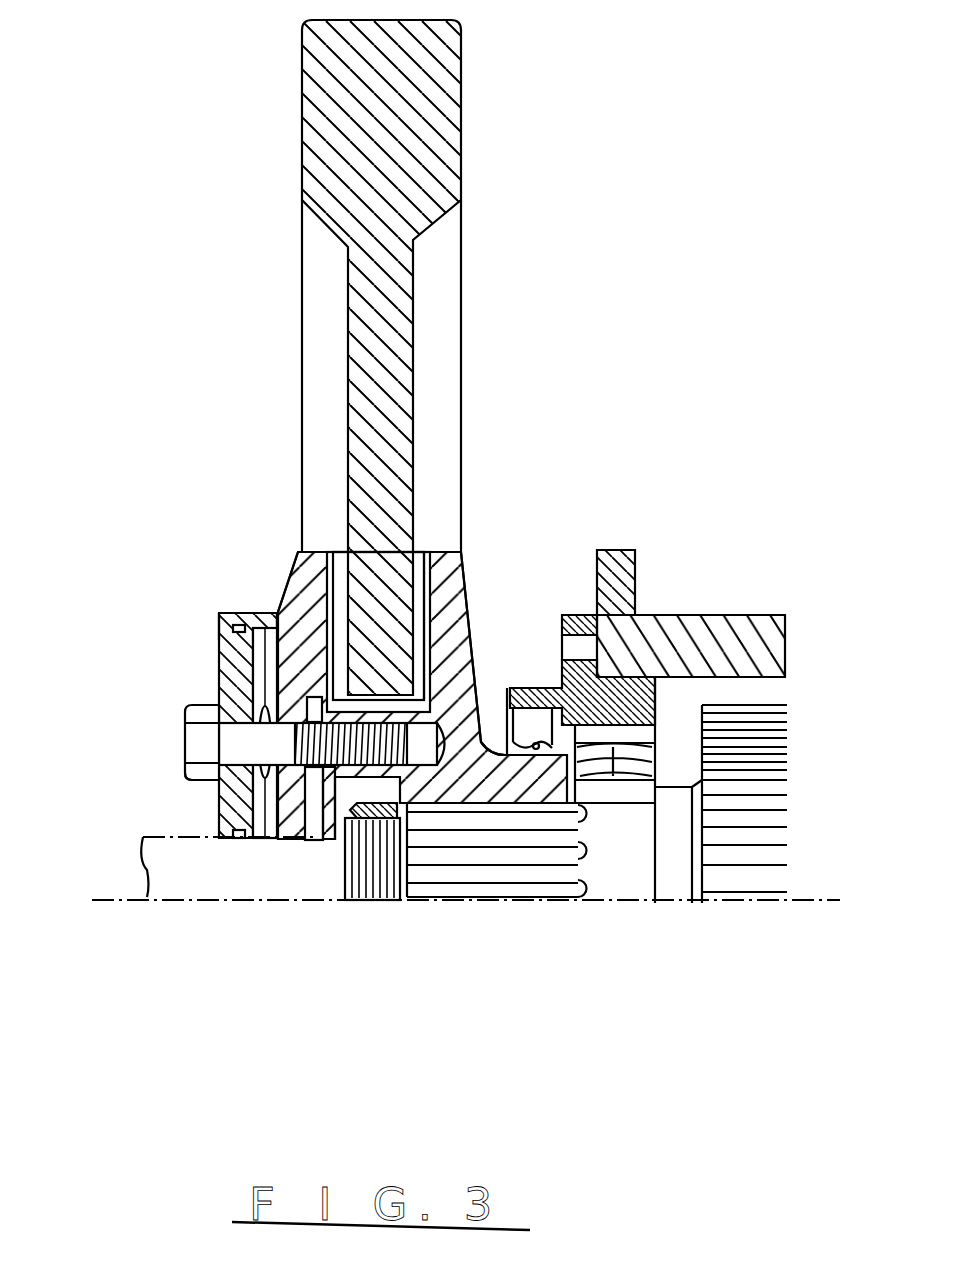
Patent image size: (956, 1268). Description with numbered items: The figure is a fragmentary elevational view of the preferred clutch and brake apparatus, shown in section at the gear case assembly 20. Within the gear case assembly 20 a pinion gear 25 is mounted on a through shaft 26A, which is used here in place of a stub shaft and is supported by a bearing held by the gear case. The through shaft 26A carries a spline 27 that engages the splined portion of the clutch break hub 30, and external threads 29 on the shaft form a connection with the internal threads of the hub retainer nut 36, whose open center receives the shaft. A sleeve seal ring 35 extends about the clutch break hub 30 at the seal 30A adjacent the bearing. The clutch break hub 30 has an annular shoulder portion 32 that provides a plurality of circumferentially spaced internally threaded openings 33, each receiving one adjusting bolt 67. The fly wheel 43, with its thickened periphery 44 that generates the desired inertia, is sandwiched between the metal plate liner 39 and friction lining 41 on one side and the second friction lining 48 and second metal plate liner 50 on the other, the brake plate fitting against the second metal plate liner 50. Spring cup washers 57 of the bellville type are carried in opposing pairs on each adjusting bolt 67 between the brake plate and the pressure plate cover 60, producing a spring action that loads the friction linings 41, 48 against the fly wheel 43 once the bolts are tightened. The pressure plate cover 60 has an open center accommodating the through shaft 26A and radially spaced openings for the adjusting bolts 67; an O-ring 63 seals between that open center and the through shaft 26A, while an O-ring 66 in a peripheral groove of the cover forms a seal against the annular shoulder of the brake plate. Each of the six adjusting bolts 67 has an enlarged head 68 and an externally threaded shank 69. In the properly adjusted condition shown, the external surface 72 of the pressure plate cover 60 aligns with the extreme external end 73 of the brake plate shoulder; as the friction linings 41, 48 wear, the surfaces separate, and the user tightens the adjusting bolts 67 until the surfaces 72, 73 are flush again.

The gear case assembly 20 is at (707, 615).
The pinion gear 25 is at (782, 738).
The through shaft 26A is at (623, 860).
The spline 27 is at (452, 850).
The external threads 29 is at (377, 900).
The clutch break hub 30 is at (487, 745).
The seal 30A is at (550, 755).
The annular shoulder portion 32 is at (338, 572).
The internally threaded openings 33 is at (347, 768).
The sleeve seal ring 35 is at (503, 732).
The hub retainer nut 36 is at (355, 815).
The metal plate liner 39 is at (445, 560).
The friction lining 41 is at (420, 562).
The fly wheel 43 is at (440, 275).
The thickened periphery 44 is at (462, 128).
The second friction lining 48 is at (380, 693).
The second metal plate liner 50 is at (297, 557).
The spring cup washers 57 is at (264, 612).
The pressure plate cover 60 is at (215, 700).
The O-ring 63 is at (237, 838).
The O-ring 66 is at (220, 614).
The adjusting bolt 67 is at (222, 743).
The enlarged head 68 is at (196, 772).
The externally threaded shank 69 is at (303, 770).
The external surface 72 is at (219, 670).
The extreme external end 73 is at (236, 628).